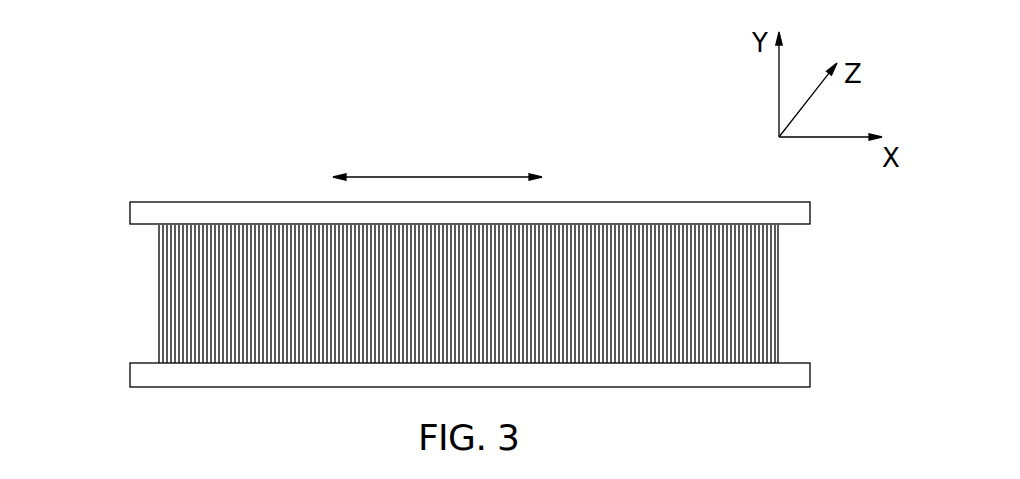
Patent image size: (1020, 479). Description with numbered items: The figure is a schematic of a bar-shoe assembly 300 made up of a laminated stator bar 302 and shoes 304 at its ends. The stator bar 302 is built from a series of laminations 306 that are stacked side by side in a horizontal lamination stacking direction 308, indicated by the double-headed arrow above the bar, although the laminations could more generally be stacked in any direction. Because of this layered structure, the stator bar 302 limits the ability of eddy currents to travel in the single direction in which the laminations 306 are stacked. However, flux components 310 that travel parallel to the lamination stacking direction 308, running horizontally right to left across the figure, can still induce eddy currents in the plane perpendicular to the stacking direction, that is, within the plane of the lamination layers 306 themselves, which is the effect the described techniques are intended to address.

The bar-shoe assembly 300 is at (143, 62).
The laminated stator bar 302 is at (128, 314).
The shoes 304 is at (128, 210).
The laminations 306 is at (238, 360).
The lamination stacking direction 308 is at (437, 157).
The flux components 310 is at (810, 270).